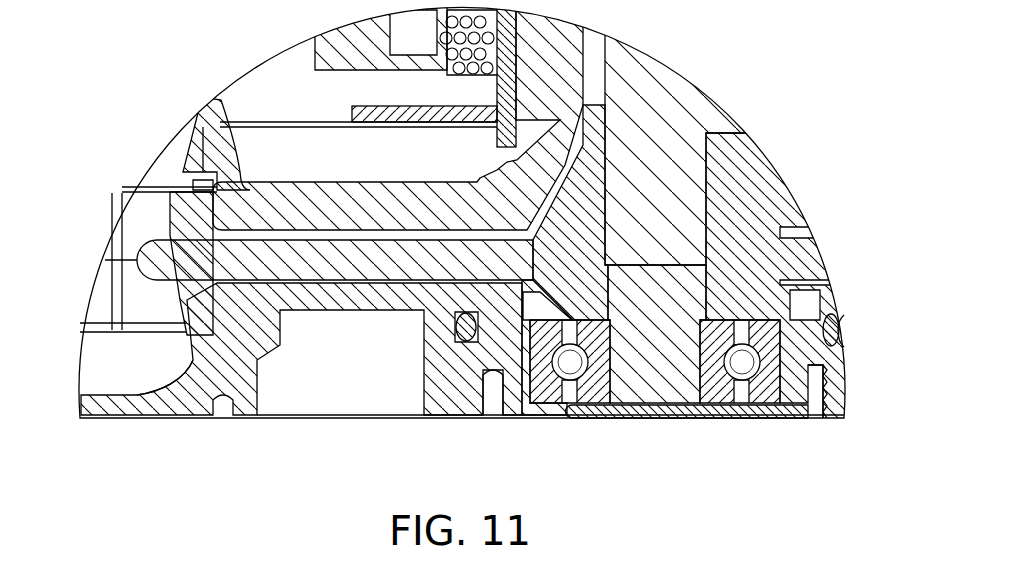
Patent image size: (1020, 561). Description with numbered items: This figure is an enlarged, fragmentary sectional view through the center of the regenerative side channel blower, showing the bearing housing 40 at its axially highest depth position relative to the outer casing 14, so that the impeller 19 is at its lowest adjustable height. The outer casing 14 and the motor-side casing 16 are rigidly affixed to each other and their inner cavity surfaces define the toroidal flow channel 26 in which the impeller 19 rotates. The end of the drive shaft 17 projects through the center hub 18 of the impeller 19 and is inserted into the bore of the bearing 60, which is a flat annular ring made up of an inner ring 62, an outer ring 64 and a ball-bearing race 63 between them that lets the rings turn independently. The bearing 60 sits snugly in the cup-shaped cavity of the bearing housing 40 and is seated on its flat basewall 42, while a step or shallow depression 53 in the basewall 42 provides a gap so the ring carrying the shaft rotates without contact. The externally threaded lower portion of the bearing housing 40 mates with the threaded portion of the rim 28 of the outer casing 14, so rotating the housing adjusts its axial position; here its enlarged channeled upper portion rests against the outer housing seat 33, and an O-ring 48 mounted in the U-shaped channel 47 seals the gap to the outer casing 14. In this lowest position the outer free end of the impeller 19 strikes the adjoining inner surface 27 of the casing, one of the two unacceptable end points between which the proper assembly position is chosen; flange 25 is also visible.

The outer casing 14 is at (160, 407).
The motor-side casing 16 is at (205, 128).
The drive shaft 17 is at (665, 117).
The center hub 18 is at (612, 322).
The impeller 19 is at (183, 250).
The flange 25 is at (218, 205).
The toroidal flow channel 26 is at (112, 393).
The inner surface 27 is at (193, 380).
The rim 28 is at (467, 360).
The outer housing seat 33 is at (482, 362).
The bearing housing 40 is at (517, 418).
The basewall 42 is at (590, 416).
The U-shaped channel 47 is at (832, 342).
The O-ring 48 is at (482, 312).
The step or shallow depression 53 is at (657, 410).
The bearing 60 is at (770, 318).
The inner ring 62 is at (772, 380).
The ball-bearing race 63 is at (572, 402).
The outer ring 64 is at (712, 392).